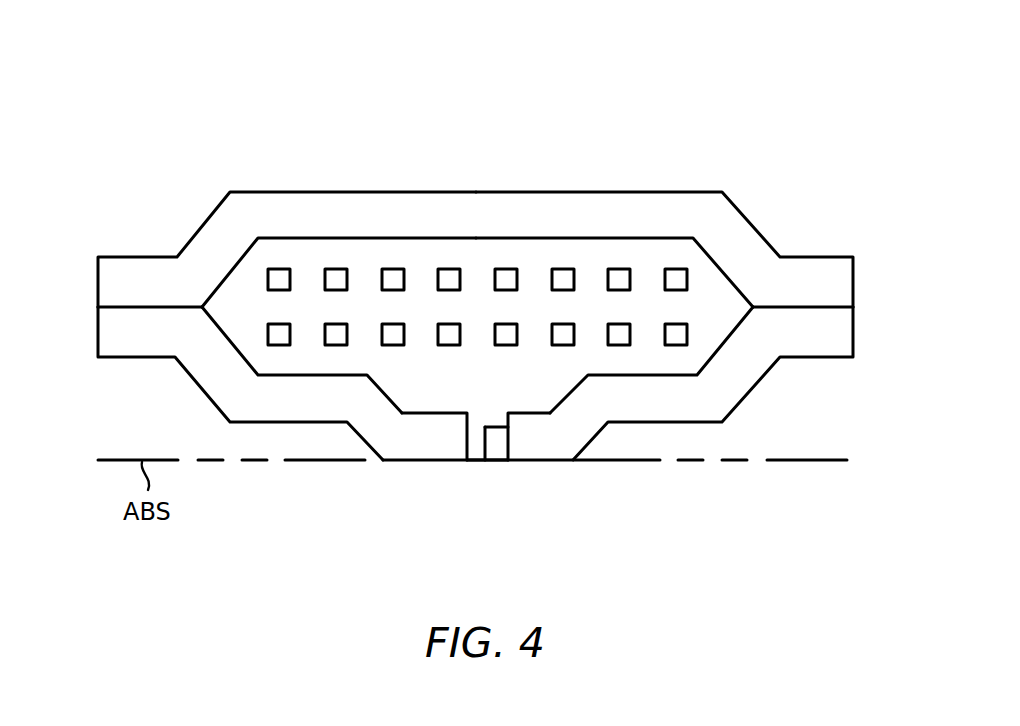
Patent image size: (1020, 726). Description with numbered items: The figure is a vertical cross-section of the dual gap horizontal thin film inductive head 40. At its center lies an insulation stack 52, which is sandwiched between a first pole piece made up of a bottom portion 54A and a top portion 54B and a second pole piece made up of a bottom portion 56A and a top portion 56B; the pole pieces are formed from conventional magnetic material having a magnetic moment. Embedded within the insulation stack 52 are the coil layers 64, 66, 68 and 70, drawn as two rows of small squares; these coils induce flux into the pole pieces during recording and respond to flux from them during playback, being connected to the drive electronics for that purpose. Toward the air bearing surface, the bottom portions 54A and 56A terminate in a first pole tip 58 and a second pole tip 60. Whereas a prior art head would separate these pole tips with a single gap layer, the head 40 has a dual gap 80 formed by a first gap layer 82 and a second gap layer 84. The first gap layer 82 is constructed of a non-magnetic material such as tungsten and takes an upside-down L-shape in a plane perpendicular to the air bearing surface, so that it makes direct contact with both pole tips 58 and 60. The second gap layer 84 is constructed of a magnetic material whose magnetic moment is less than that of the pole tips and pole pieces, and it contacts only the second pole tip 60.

The dual gap horizontal thin film inductive head 40 is at (527, 150).
The insulation stack 52 is at (472, 310).
The bottom portion of first pole piece 54A is at (268, 398).
The top portion of first pole piece 54B is at (278, 213).
The bottom portion of second pole piece 56A is at (653, 395).
The top portion of second pole piece 56B is at (580, 205).
The first pole tip 58 is at (425, 447).
The second pole tip 60 is at (572, 440).
The coil layer 64 is at (392, 337).
The coil layer 66 is at (622, 335).
The coil layer 68 is at (282, 273).
The coil layer 70 is at (618, 275).
The dual gap 80 is at (492, 468).
The first gap layer 82 is at (478, 453).
The second gap layer 84 is at (502, 462).